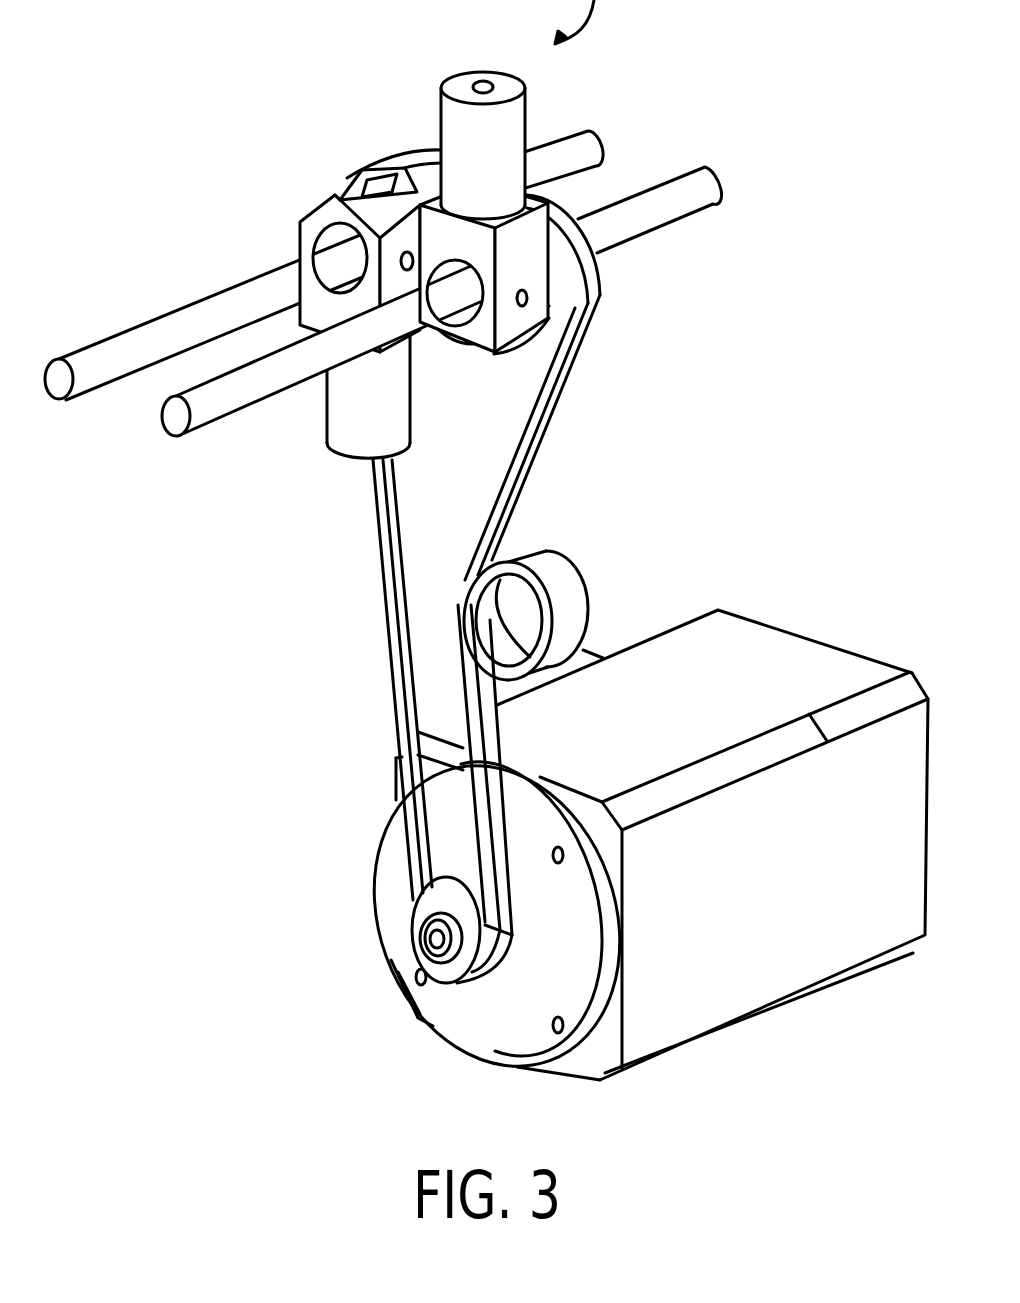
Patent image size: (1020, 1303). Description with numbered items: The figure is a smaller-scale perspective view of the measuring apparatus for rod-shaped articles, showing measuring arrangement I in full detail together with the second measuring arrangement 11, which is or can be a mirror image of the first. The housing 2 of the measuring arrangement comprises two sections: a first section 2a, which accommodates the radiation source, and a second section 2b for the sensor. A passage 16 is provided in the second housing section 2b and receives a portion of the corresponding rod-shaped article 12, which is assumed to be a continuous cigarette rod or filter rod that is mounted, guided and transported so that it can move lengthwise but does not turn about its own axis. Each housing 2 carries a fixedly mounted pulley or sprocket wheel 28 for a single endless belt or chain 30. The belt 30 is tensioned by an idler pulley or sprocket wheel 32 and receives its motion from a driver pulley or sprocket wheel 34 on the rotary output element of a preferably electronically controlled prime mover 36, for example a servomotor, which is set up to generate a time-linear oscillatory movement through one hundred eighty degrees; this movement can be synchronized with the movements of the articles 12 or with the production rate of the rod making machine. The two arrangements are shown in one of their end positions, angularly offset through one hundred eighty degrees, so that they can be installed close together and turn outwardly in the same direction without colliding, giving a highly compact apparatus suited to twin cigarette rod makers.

The measuring arrangement II 11 is at (286, 179).
The rod-shaped article 12 is at (128, 352).
The housing 2 is at (527, 166).
The first housing section 2a is at (457, 118).
The second housing section 2b is at (535, 238).
The passage 16 is at (475, 330).
The pulley or sprocket wheel 28 is at (558, 290).
The endless belt or chain 30 is at (557, 400).
The idler pulley or sprocket wheel 32 is at (562, 604).
The driver pulley or sprocket wheel 34 is at (420, 917).
The prime mover 36 is at (787, 899).